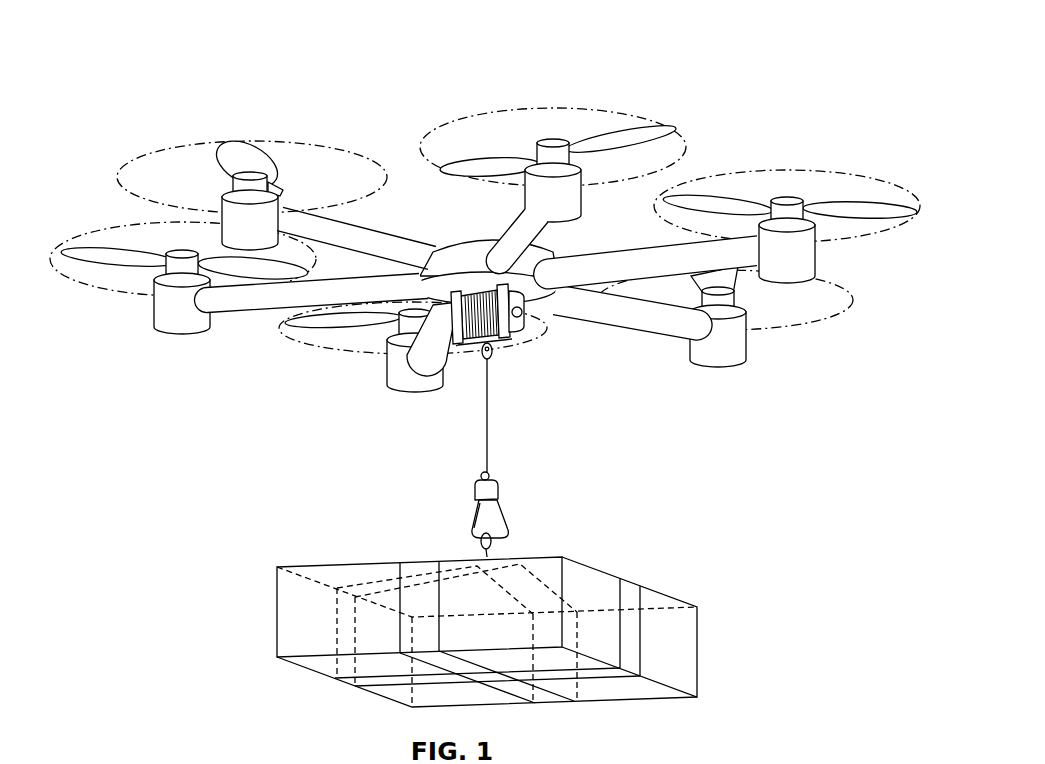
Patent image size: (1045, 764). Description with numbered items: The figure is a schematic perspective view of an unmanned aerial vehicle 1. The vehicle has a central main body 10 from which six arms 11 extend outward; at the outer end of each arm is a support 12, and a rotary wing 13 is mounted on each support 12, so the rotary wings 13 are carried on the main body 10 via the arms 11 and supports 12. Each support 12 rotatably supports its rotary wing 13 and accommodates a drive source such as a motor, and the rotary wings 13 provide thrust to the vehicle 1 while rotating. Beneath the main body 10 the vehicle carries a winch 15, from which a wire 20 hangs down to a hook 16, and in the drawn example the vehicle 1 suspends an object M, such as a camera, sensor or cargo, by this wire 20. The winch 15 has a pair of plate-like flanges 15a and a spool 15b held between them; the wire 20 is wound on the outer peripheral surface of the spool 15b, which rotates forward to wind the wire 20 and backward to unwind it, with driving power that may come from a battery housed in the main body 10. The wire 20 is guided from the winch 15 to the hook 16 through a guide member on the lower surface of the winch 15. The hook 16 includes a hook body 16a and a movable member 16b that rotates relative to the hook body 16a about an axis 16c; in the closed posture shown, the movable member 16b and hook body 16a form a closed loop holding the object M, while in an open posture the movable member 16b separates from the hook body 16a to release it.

The unmanned aerial vehicle 1 is at (711, 98).
The main body 10 is at (462, 253).
The arm 11 is at (268, 298).
The support 12 is at (227, 207).
The rotary wing 13 is at (247, 150).
The winch 15 is at (510, 342).
The flange 15a is at (528, 338).
The spool 15b is at (491, 357).
The hook 16 is at (505, 510).
The hook body 16a is at (490, 476).
The movable member 16b is at (473, 511).
The axis 16c is at (474, 486).
The wire 20 is at (488, 423).
The object M is at (338, 562).